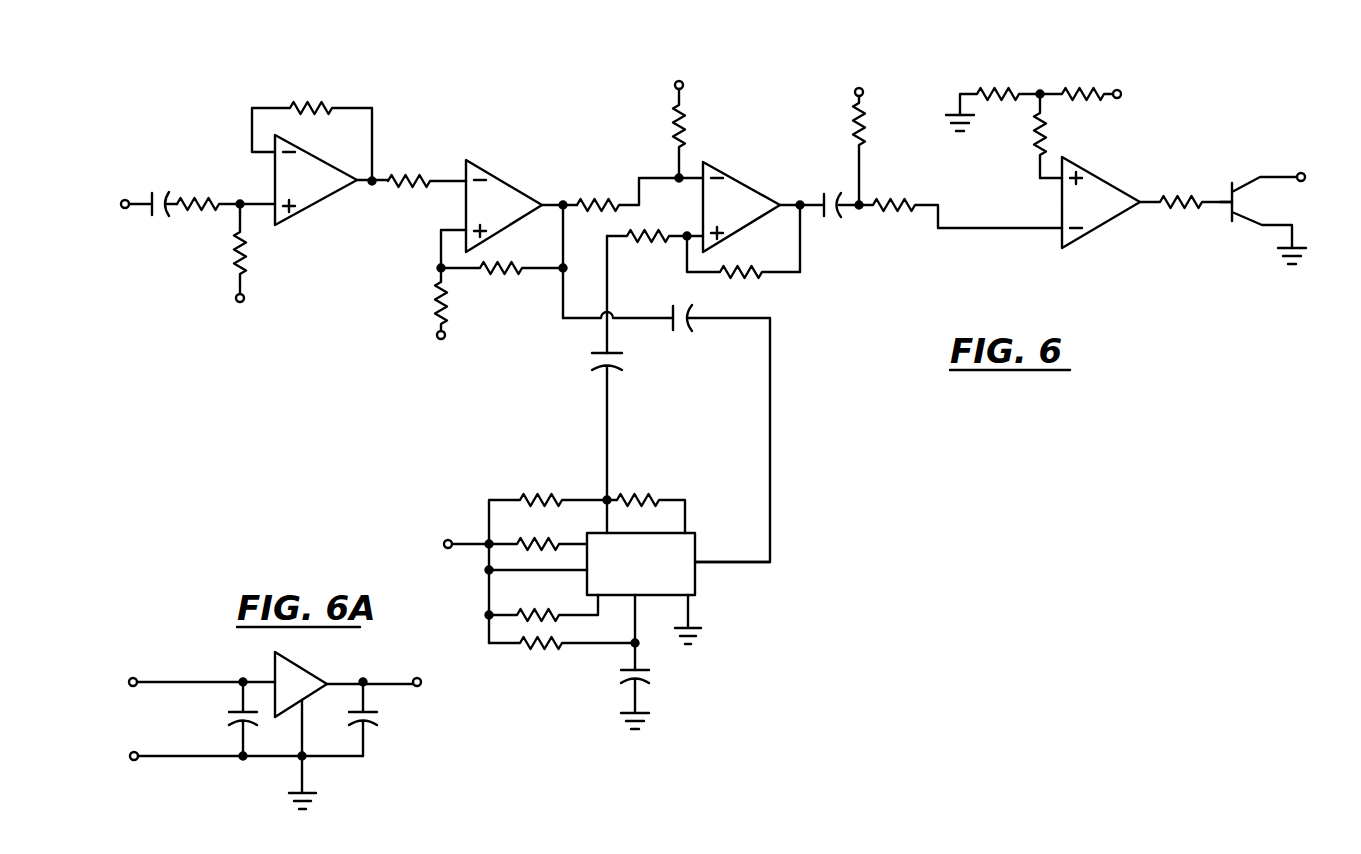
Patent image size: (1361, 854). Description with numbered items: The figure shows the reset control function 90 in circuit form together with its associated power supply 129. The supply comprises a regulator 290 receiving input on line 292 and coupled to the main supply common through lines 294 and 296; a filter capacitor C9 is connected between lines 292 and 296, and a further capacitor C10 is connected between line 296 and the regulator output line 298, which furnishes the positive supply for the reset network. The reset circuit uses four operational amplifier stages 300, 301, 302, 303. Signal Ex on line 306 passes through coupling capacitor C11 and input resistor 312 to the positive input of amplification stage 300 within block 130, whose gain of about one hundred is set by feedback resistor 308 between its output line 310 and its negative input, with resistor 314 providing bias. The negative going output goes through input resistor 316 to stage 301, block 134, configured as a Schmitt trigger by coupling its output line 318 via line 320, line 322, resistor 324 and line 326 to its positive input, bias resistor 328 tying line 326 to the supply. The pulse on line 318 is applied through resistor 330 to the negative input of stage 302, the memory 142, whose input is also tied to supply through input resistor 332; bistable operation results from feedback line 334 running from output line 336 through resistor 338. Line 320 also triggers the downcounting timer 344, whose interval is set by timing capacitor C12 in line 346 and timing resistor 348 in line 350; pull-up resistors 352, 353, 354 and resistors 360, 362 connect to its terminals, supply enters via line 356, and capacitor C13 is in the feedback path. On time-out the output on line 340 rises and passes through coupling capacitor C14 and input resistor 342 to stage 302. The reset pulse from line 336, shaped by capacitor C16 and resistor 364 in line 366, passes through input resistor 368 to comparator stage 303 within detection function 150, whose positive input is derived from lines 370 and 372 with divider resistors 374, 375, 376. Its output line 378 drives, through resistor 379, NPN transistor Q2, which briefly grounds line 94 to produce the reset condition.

In FIG. 6, the first amplifier stage 130 is at (395, 113).
In FIG. 6, the Schmitt trigger block 134 is at (568, 147).
In FIG. 6, the memory 142 is at (790, 86).
In FIG. 6, the negative going trigger detection function 150 is at (1046, 22).
In FIG. 6, the reset control function 90 is at (1176, 93).
In FIG. 6, the line 94 is at (1282, 174).
In FIG. 6, the line 306 is at (140, 214).
In FIG. 6, the feedback resistor 308 is at (311, 102).
In FIG. 6, the output line 310 is at (368, 186).
In FIG. 6, the input resistor 312 is at (199, 203).
In FIG. 6, the resistor 314 is at (226, 250).
In FIG. 6, the input resistor 316 is at (392, 176).
In FIG. 6, the amplification stage 300 is at (303, 206).
In FIG. 6, the stage 301 is at (499, 176).
In FIG. 6, the stage 302 is at (732, 180).
In FIG. 6, the stage 303 is at (1100, 172).
In FIG. 6, the line 318 is at (569, 188).
In FIG. 6, the line 320 is at (562, 250).
In FIG. 6, the line 322 is at (556, 276).
In FIG. 6, the resistor 324 is at (504, 276).
In FIG. 6, the line 326 is at (441, 248).
In FIG. 6, the bias resistor 328 is at (430, 300).
In FIG. 6, the resistor 330 is at (600, 192).
In FIG. 6, the input resistor 332 is at (686, 128).
In FIG. 6, the feedback line 334 is at (794, 274).
In FIG. 6, the line 336 is at (814, 210).
In FIG. 6, the resistor 338 is at (734, 264).
In FIG. 6, the line 340 is at (609, 278).
In FIG. 6, the input resistor 342 is at (650, 230).
In FIG. 6, the timer 344 is at (694, 594).
In FIG. 6, the line 346 is at (642, 655).
In FIG. 6, the timing resistor 348 is at (540, 648).
In FIG. 6, the line 350 is at (602, 644).
In FIG. 6, the pull-up resistor 352 is at (536, 496).
In FIG. 6, the pull-up resistor 353 is at (530, 542).
In FIG. 6, the pull-up resistor 354 is at (540, 614).
In FIG. 6, the line 356 is at (540, 574).
In FIG. 6, the output line 360 is at (680, 504).
In FIG. 6, the resistor 362 is at (638, 496).
In FIG. 6, the resistor 364 is at (868, 126).
In FIG. 6, the line 366 is at (862, 170).
In FIG. 6, the input resistor 368 is at (896, 200).
In FIG. 6, the line 370 is at (1036, 166).
In FIG. 6, the line 372 is at (1024, 92).
In FIG. 6, the resistor 374 is at (1038, 132).
In FIG. 6, the resistor 375 is at (1084, 92).
In FIG. 6, the resistor 376 is at (990, 90).
In FIG. 6, the line 378 is at (1150, 196).
In FIG. 6, the resistor 379 is at (1180, 210).
In FIG. 6, the NPN transistor Q2 is at (1246, 201).
In FIG. 6, the coupling capacitor C11 is at (155, 197).
In FIG. 6, the timing capacitor C12 is at (644, 680).
In FIG. 6, the capacitor C13 is at (688, 332).
In FIG. 6, the coupling capacitor C14 is at (598, 358).
In FIG. 6, the capacitor C16 is at (838, 194).
In FIG. 6A, the power supply 129 is at (220, 648).
In FIG. 6A, the regulator 290 is at (304, 670).
In FIG. 6A, the line 292 is at (180, 680).
In FIG. 6A, the line 294 is at (304, 734).
In FIG. 6A, the line 296 is at (186, 760).
In FIG. 6A, the output line 298 is at (388, 680).
In FIG. 6A, the filter capacitor C9 is at (228, 718).
In FIG. 6A, the capacitor C10 is at (370, 718).